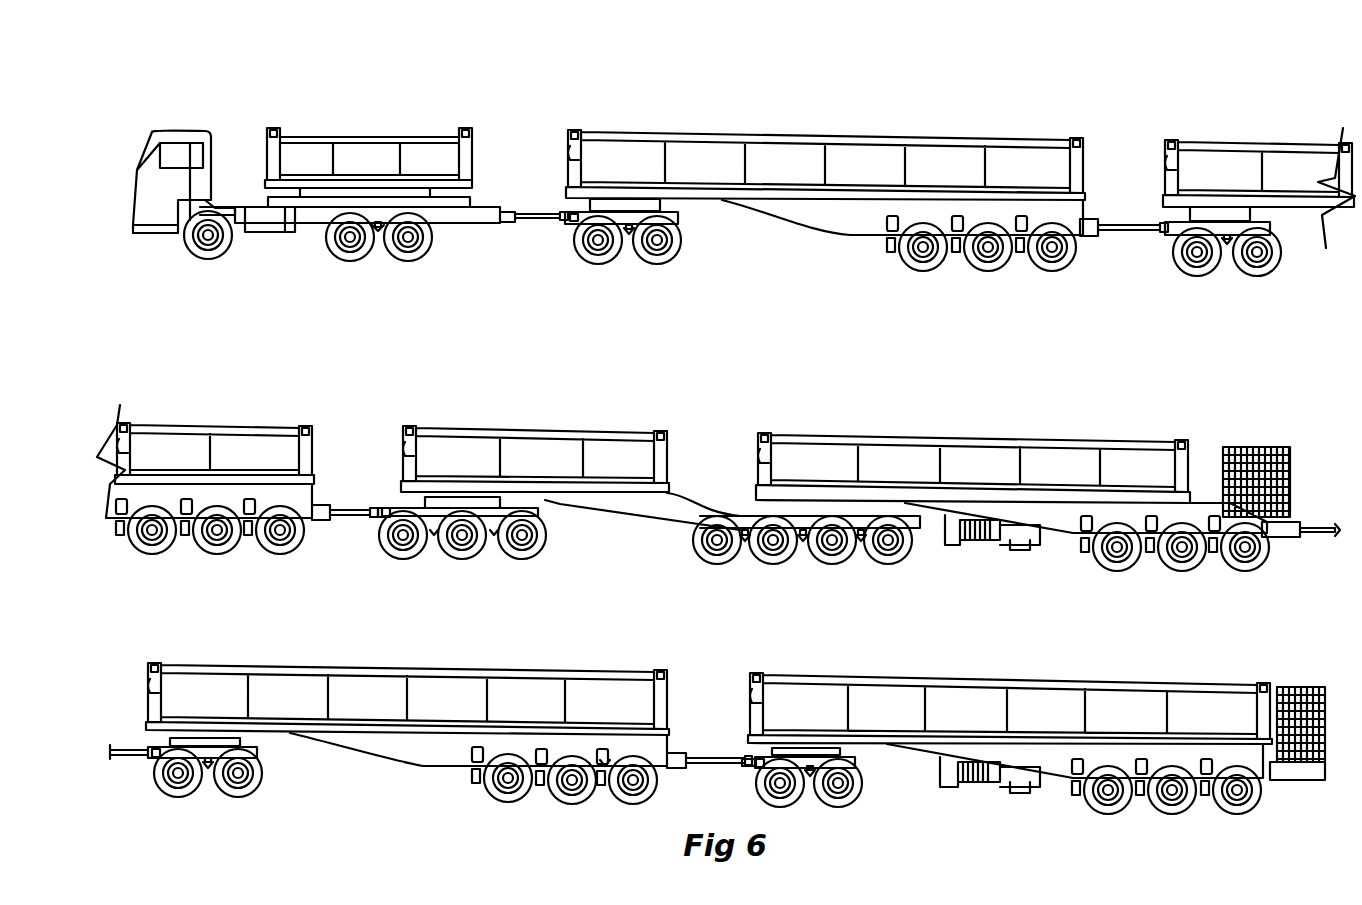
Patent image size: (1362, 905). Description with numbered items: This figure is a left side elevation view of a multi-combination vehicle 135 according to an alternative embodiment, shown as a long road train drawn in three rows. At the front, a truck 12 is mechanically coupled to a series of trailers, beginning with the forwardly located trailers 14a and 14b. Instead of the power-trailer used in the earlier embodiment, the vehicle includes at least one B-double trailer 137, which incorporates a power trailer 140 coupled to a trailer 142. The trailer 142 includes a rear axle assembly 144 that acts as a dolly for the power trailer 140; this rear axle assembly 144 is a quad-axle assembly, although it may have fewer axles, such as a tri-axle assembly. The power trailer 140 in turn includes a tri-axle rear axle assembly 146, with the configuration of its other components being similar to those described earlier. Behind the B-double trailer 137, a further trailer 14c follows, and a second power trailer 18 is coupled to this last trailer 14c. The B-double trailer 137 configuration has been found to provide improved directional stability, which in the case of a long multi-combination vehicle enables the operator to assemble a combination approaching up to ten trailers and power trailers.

The truck 12 is at (438, 124).
The trailer 14a is at (809, 127).
The multi-combination vehicle 135 is at (1248, 114).
The trailer 14b is at (229, 416).
The B-double trailer 137 is at (1293, 438).
The trailer 142 is at (467, 461).
The power trailer 140 is at (1046, 434).
The rear axle assembly 144 is at (693, 565).
The tri-axle rear axle assembly 146 is at (1270, 568).
The trailer 14c is at (439, 664).
The second power trailer 18 is at (989, 671).